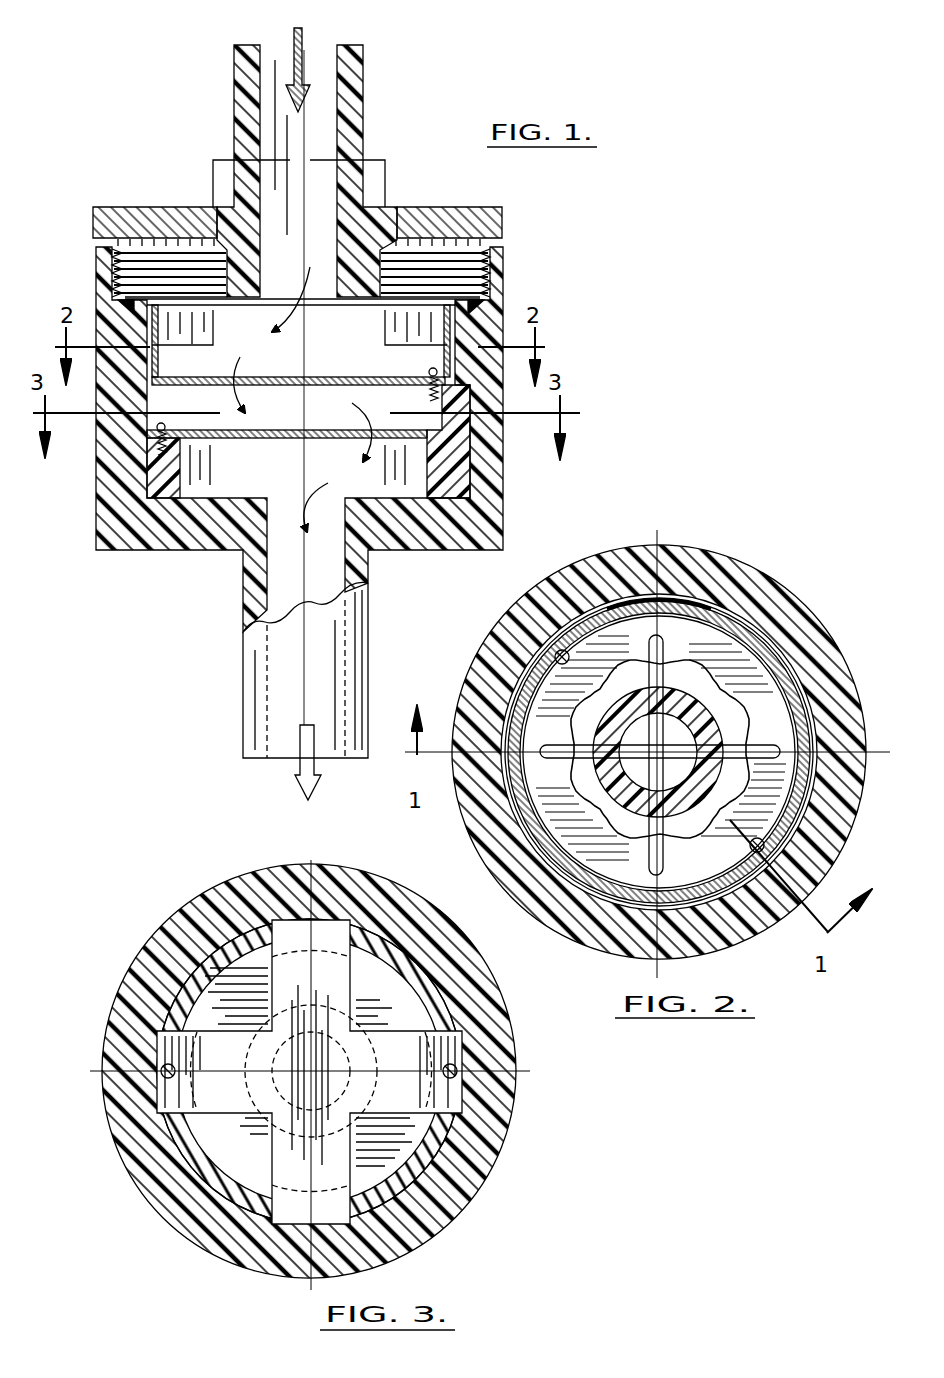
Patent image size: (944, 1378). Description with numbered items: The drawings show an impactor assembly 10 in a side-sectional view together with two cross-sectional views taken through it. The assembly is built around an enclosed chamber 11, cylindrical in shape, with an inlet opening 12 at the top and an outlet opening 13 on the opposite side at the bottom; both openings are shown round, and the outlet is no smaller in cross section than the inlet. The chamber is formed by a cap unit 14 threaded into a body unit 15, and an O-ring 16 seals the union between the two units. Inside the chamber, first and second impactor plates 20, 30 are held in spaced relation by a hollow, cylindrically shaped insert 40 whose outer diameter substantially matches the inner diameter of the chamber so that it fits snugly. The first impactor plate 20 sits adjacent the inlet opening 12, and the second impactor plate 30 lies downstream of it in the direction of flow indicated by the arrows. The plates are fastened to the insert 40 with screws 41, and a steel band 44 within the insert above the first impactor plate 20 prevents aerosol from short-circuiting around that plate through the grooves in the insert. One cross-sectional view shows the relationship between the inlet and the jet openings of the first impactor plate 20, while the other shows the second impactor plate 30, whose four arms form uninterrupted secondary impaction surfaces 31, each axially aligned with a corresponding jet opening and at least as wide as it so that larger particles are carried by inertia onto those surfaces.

In FIG. 1, the impactor assembly 10 is at (522, 283).
In FIG. 1, the enclosed chamber 11 is at (352, 342).
In FIG. 1, the inlet opening 12 is at (322, 52).
In FIG. 1, the outlet opening 13 is at (280, 766).
In FIG. 1, the cap unit 14 is at (500, 207).
In FIG. 1, the body unit 15 is at (100, 550).
In FIG. 2, the body unit 15 is at (793, 600).
In FIG. 3, the body unit 15 is at (172, 915).
In FIG. 1, the O-ring 16 is at (118, 300).
In FIG. 1, the first impactor plate 20 is at (328, 384).
In FIG. 1, the second impactor plate 30 is at (325, 440).
In FIG. 3, the second impactor plate 30 is at (272, 1142).
In FIG. 3, the secondary impaction surface 31 is at (356, 1030).
In FIG. 1, the insert 40 is at (180, 470).
In FIG. 3, the insert 40 is at (240, 982).
In FIG. 1, the screws 41 is at (428, 370).
In FIG. 1, the steel band 44 is at (160, 368).